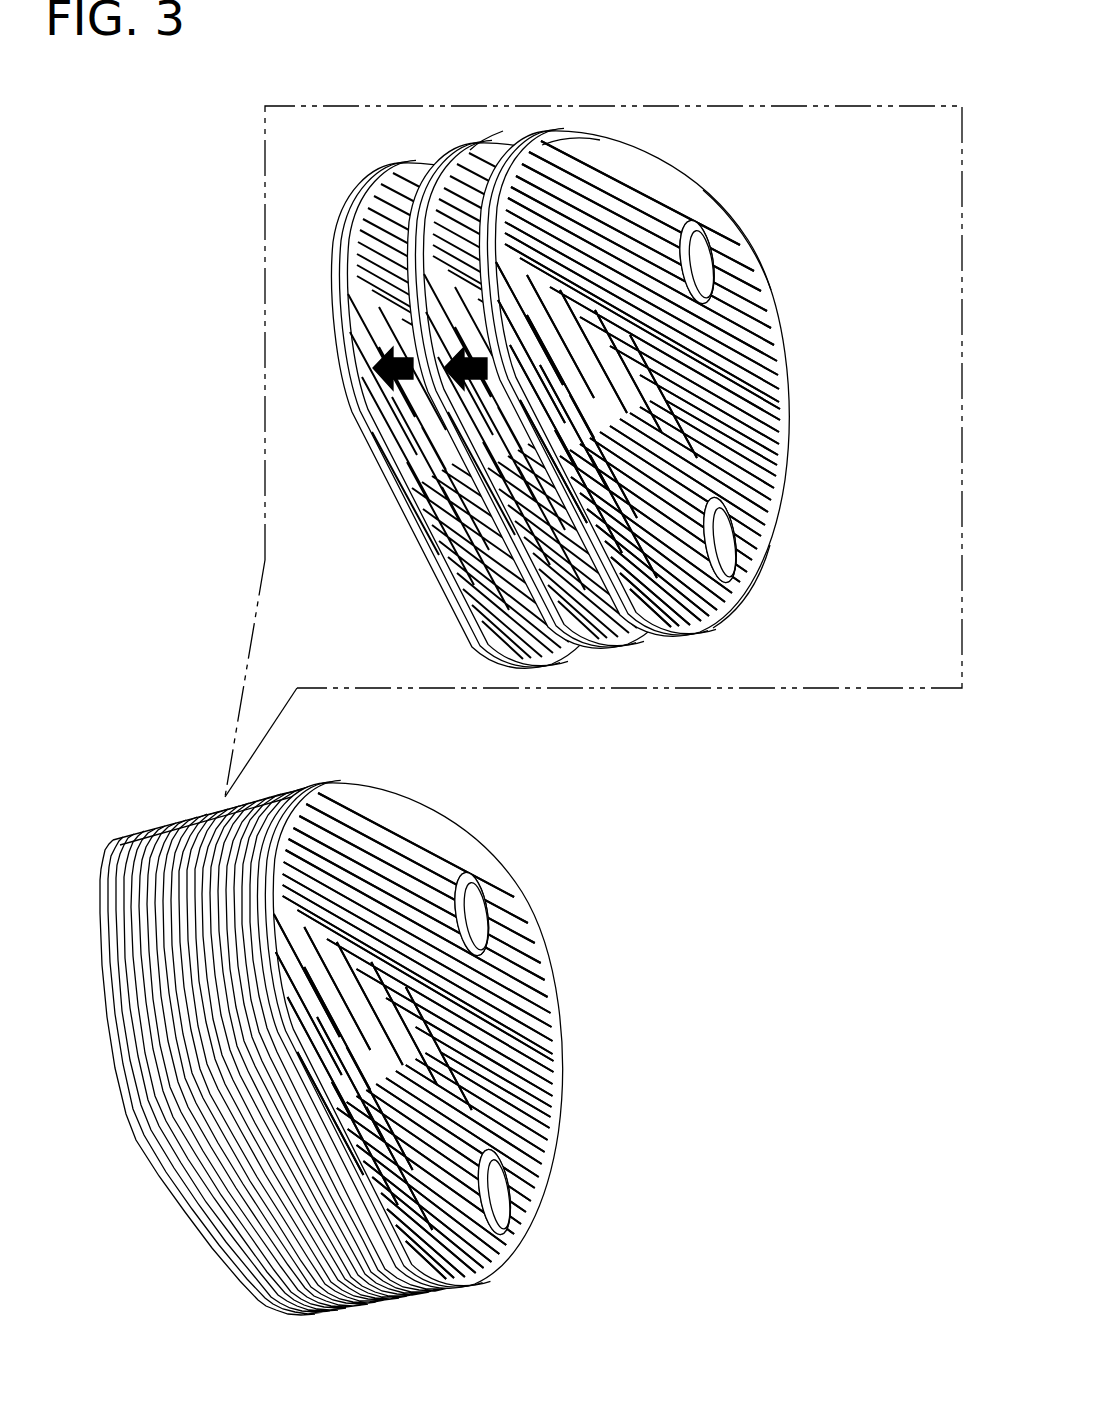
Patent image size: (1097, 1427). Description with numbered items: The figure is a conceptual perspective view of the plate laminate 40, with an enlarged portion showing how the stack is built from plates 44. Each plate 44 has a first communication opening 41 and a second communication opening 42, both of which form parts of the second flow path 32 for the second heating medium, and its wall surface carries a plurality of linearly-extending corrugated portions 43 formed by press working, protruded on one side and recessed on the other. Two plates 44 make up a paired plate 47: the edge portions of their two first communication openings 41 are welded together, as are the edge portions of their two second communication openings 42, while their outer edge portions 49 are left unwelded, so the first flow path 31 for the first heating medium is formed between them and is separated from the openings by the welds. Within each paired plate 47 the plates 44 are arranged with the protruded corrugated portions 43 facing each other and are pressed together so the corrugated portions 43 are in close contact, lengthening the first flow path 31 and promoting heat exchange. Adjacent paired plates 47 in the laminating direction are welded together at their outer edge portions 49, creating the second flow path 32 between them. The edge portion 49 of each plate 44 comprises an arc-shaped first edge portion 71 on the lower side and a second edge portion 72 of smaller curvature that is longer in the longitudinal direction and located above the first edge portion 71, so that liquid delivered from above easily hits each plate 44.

The first flow path 31 is at (483, 162).
The second flow path 32 is at (457, 197).
The plate laminate 40 is at (325, 1025).
The first communication opening 41 is at (700, 270).
The second communication opening 42 is at (722, 548).
The corrugated portion 43 is at (403, 192).
The plate 44 is at (502, 130).
The paired plate 47 is at (674, 3).
The outer edge portion 49 is at (108, 840).
The first edge portion 71 is at (752, 590).
The second edge portion 72 is at (720, 215).